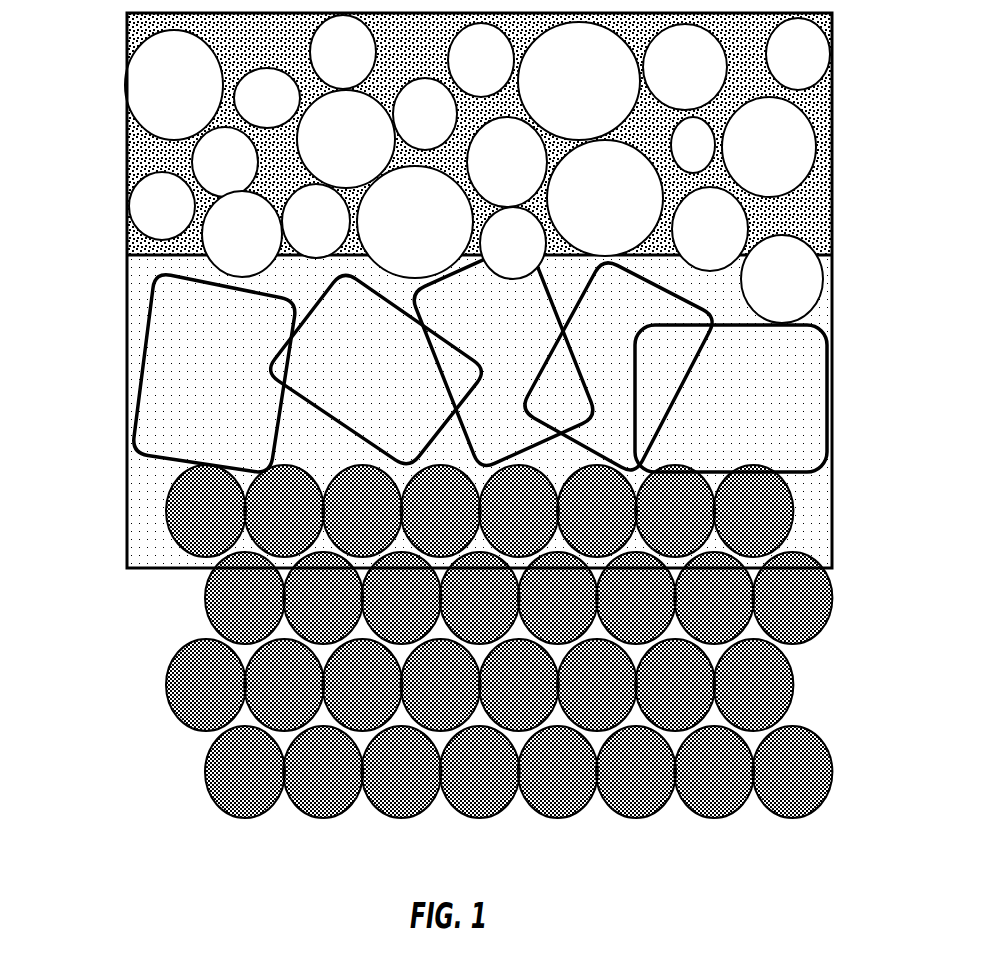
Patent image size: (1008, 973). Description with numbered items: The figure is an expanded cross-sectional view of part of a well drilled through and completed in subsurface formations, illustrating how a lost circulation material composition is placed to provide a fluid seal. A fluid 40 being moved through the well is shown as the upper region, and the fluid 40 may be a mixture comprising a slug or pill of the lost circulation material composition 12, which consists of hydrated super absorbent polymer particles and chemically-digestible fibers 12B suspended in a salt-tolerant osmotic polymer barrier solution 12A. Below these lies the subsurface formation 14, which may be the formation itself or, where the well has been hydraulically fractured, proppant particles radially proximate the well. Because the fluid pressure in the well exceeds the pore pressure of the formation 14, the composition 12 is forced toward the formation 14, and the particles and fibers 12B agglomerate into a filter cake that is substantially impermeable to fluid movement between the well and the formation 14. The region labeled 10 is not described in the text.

The first layer (porous open-cell foam layer) 10 is at (105, 15).
The lost circulation material composition 12 is at (419, 411).
The salt-tolerant osmotic polymer barrier solution 12A is at (155, 271).
The super absorbent polymer particles and chemically-digestible fibers 12B is at (67, 473).
The subsurface formation 14 is at (107, 498).
The fluid 40 is at (855, 50).